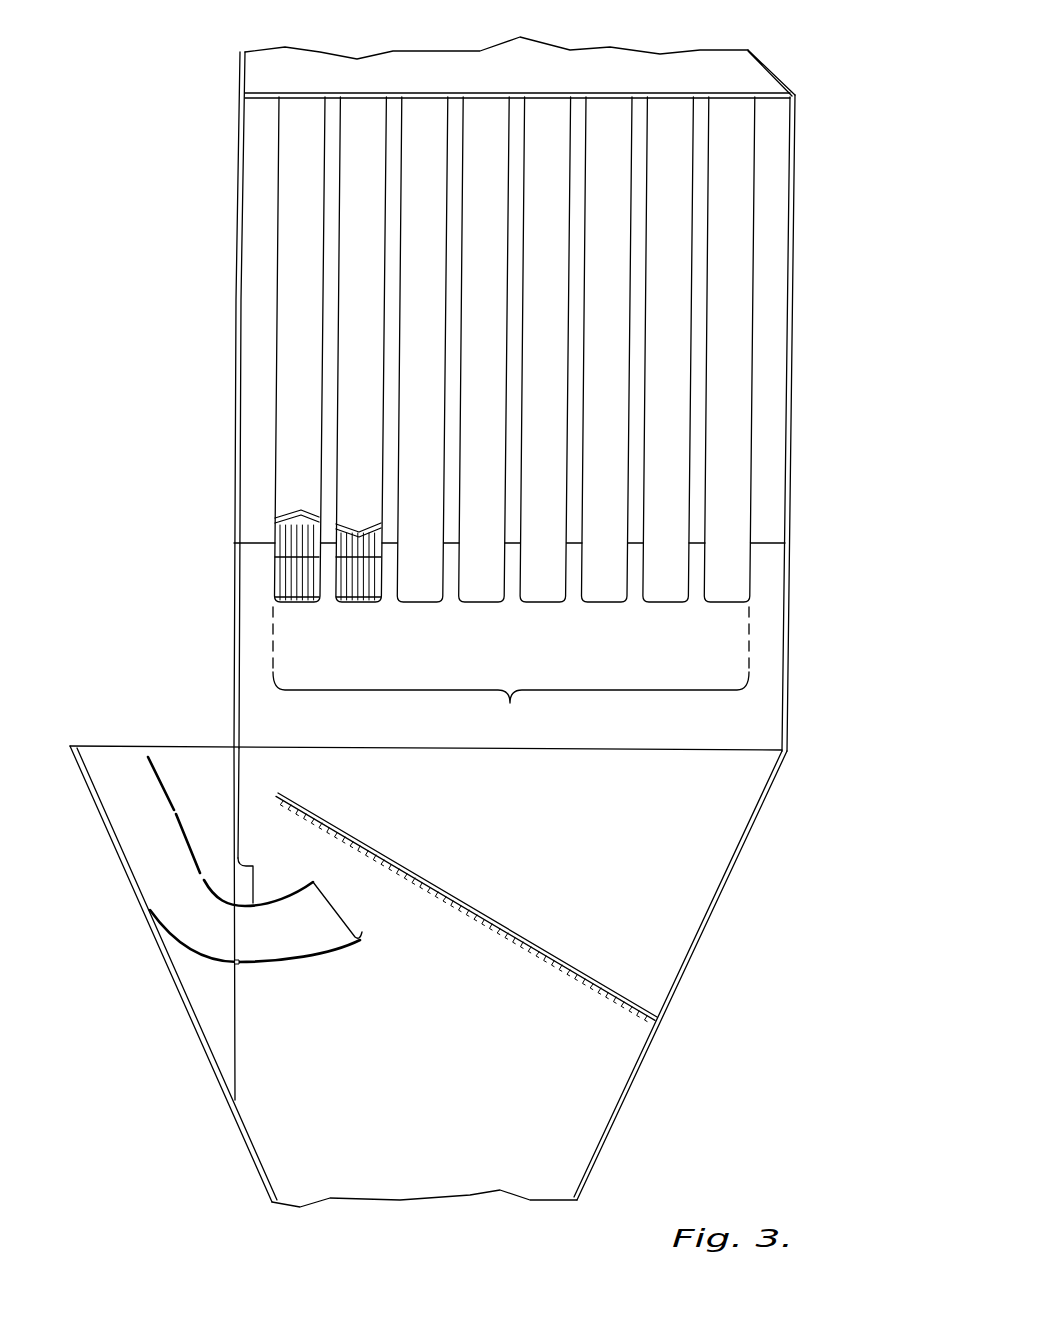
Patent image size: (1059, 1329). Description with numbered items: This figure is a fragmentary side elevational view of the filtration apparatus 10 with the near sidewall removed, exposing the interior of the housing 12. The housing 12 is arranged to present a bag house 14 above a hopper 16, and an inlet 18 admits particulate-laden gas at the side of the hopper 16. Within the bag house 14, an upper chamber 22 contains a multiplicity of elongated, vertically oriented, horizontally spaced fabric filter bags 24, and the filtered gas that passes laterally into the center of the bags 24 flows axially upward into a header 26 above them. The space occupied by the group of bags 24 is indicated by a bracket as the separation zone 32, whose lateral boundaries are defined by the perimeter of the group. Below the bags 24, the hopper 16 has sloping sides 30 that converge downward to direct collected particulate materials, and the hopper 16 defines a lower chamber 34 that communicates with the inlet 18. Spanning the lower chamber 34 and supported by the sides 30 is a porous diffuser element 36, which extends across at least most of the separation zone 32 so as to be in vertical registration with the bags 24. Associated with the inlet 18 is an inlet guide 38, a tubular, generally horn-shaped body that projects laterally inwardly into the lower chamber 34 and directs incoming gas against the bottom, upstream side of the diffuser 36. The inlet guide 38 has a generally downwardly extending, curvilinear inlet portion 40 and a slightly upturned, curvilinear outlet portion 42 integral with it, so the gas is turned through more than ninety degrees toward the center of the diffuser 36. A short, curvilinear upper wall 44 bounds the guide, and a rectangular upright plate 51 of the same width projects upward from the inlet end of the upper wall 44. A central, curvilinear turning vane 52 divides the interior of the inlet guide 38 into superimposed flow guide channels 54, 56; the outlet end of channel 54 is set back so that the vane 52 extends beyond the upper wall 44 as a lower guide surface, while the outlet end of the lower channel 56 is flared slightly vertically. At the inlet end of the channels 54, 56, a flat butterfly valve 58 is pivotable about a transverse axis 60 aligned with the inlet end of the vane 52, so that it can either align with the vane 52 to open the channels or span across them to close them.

The filtration apparatus 10 is at (216, 66).
The housing 12 is at (792, 185).
The bag house 14 is at (236, 163).
The hopper 16 is at (729, 893).
The inlet 18 is at (95, 745).
The upper chamber 22 is at (266, 306).
The fabric filter bags 24 is at (285, 450).
The header 26 is at (661, 60).
The sloping sides 30 is at (238, 1123).
The separation zone 32 is at (509, 416).
The lower chamber 34 is at (305, 1142).
The porous diffuser element 36 is at (566, 985).
The inlet guide 38 is at (204, 968).
The inlet portion 40 is at (168, 941).
The outlet portion 42 is at (320, 963).
The upper wall 44 is at (245, 862).
The upright plate 51 is at (241, 781).
The turning vane 52 is at (258, 905).
The upper flow guide channel 54 is at (248, 885).
The lower flow guide channel 56 is at (364, 933).
The butterfly valve 58 is at (163, 782).
The transverse axis 60 is at (175, 813).